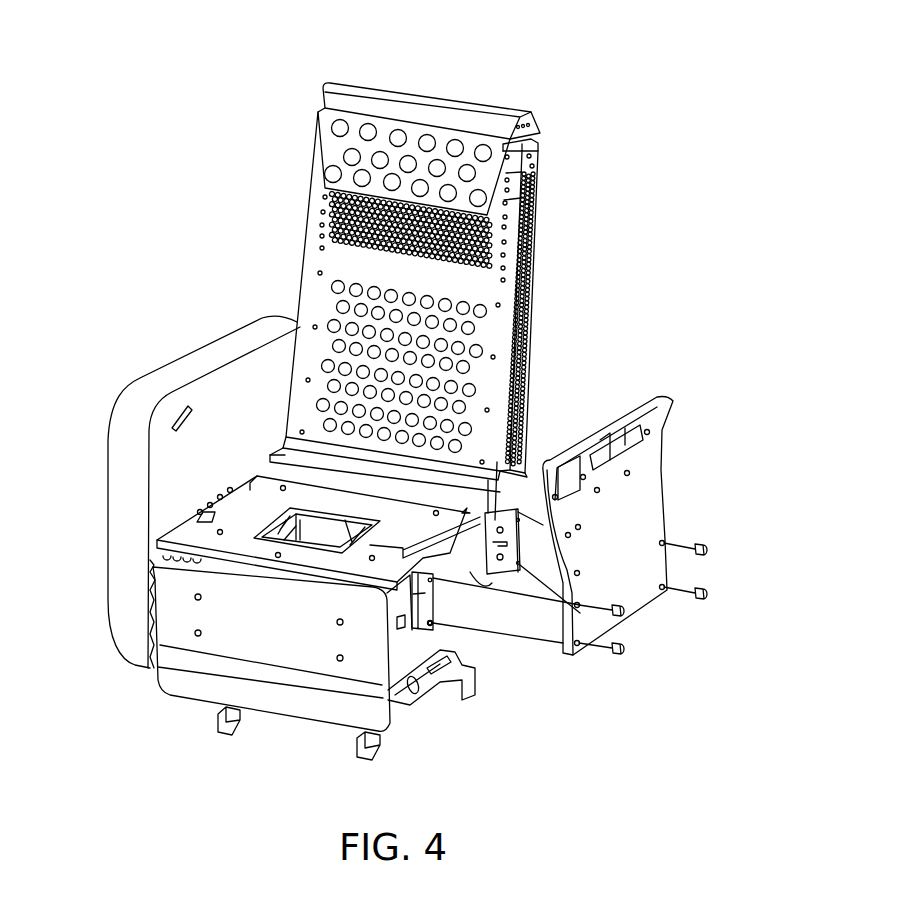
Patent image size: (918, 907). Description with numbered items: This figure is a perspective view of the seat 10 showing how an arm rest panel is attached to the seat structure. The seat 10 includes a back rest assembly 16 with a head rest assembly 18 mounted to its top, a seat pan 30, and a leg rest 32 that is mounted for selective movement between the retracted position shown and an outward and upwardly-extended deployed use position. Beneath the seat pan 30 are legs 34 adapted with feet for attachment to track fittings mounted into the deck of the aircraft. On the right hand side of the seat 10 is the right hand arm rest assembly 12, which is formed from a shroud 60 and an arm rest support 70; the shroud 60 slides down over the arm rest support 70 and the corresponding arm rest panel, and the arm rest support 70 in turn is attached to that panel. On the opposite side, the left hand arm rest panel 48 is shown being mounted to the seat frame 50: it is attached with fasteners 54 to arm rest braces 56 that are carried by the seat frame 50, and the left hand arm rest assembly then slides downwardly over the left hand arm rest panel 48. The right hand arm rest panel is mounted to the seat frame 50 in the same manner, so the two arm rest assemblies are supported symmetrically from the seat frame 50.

The seat 10 is at (206, 141).
The right hand arm rest assembly 12 is at (184, 317).
The back rest assembly 16 is at (528, 272).
The head rest assembly 18 is at (481, 118).
The seat pan 30 is at (193, 532).
The leg rest 32 is at (170, 610).
The legs 34 is at (355, 750).
The left hand arm rest panel 48 is at (652, 484).
The seat frame 50 is at (487, 585).
The fasteners 54 is at (624, 645).
The arm rest braces 56 is at (588, 646).
The shroud 60 is at (167, 382).
The arm rest support 70 is at (183, 468).